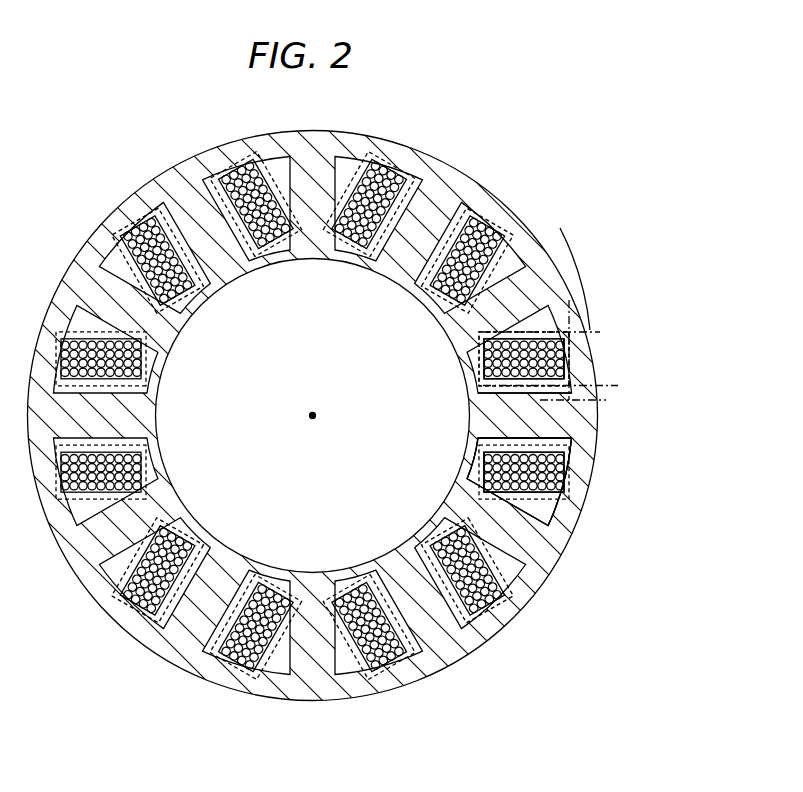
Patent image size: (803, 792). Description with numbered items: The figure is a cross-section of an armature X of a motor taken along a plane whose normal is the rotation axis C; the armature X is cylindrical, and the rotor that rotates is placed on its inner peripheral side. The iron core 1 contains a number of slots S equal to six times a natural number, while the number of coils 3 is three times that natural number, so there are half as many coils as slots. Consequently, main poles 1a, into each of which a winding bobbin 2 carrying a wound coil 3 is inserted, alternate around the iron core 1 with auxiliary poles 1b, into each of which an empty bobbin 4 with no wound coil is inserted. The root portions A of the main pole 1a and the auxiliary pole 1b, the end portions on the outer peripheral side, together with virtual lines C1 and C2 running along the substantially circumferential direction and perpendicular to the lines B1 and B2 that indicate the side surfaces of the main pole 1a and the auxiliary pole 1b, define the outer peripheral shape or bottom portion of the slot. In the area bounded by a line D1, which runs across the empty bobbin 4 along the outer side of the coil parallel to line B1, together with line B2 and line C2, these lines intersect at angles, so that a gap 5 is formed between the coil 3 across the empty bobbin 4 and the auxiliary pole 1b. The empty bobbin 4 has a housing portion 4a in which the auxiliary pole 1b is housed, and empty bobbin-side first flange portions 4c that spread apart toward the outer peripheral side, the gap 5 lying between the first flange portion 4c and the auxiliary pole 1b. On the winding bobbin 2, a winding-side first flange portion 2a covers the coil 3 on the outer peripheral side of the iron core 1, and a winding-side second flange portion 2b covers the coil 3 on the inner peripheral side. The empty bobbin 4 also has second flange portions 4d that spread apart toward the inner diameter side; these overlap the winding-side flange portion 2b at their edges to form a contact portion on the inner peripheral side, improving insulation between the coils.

The iron core 1 is at (456, 186).
The main pole 1a is at (526, 410).
The auxiliary pole 1b is at (518, 304).
The winding bobbin 2 is at (469, 412).
The winding-side first flange portion 2a is at (576, 481).
The winding-side second flange portion 2b is at (471, 456).
The coil 3 is at (566, 464).
The empty bobbin 4 is at (472, 340).
The housing portion 4a is at (568, 344).
The empty bobbin-side first flange portion 4c is at (545, 493).
The empty bobbin-side second flange portion 4d is at (471, 470).
The gap 5 is at (550, 322).
The root portion A is at (550, 292).
The line B1 is at (466, 385).
The line B2 is at (458, 356).
The rotation axis C is at (311, 414).
The line C1 is at (592, 401).
The line C2 is at (601, 381).
The line D1 is at (582, 330).
The slot S is at (498, 604).
The armature X is at (512, 192).